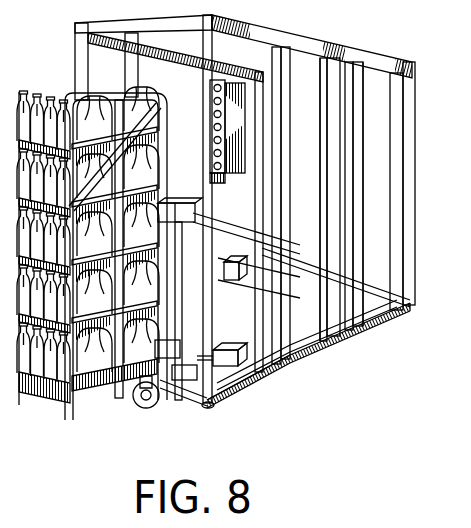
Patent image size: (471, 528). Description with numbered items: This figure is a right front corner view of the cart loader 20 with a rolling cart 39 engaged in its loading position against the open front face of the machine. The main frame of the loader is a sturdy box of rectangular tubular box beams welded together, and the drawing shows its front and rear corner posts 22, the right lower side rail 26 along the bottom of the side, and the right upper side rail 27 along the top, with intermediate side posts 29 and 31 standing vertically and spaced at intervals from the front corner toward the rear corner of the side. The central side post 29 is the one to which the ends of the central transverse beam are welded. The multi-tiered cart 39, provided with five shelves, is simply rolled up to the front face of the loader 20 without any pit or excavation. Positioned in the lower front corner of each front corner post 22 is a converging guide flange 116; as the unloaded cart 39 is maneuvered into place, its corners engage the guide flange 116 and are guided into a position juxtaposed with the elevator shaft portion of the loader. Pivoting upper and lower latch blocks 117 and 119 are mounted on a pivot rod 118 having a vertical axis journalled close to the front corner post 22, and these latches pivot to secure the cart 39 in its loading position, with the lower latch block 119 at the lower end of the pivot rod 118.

The cart loader 20 is at (366, 337).
The front and rear corner posts 22 is at (412, 180).
The right and left lower side rails 26 is at (377, 309).
The right and left upper side rails 27 is at (296, 40).
The intermediate side post 29 is at (325, 155).
The intermediate side post 31 is at (355, 156).
The rolling cart 39 is at (54, 405).
The converging guide flange 116 is at (168, 368).
The upper latch block 117 is at (178, 207).
The pivot rod 118 is at (180, 308).
The lower latch block 119 is at (205, 404).